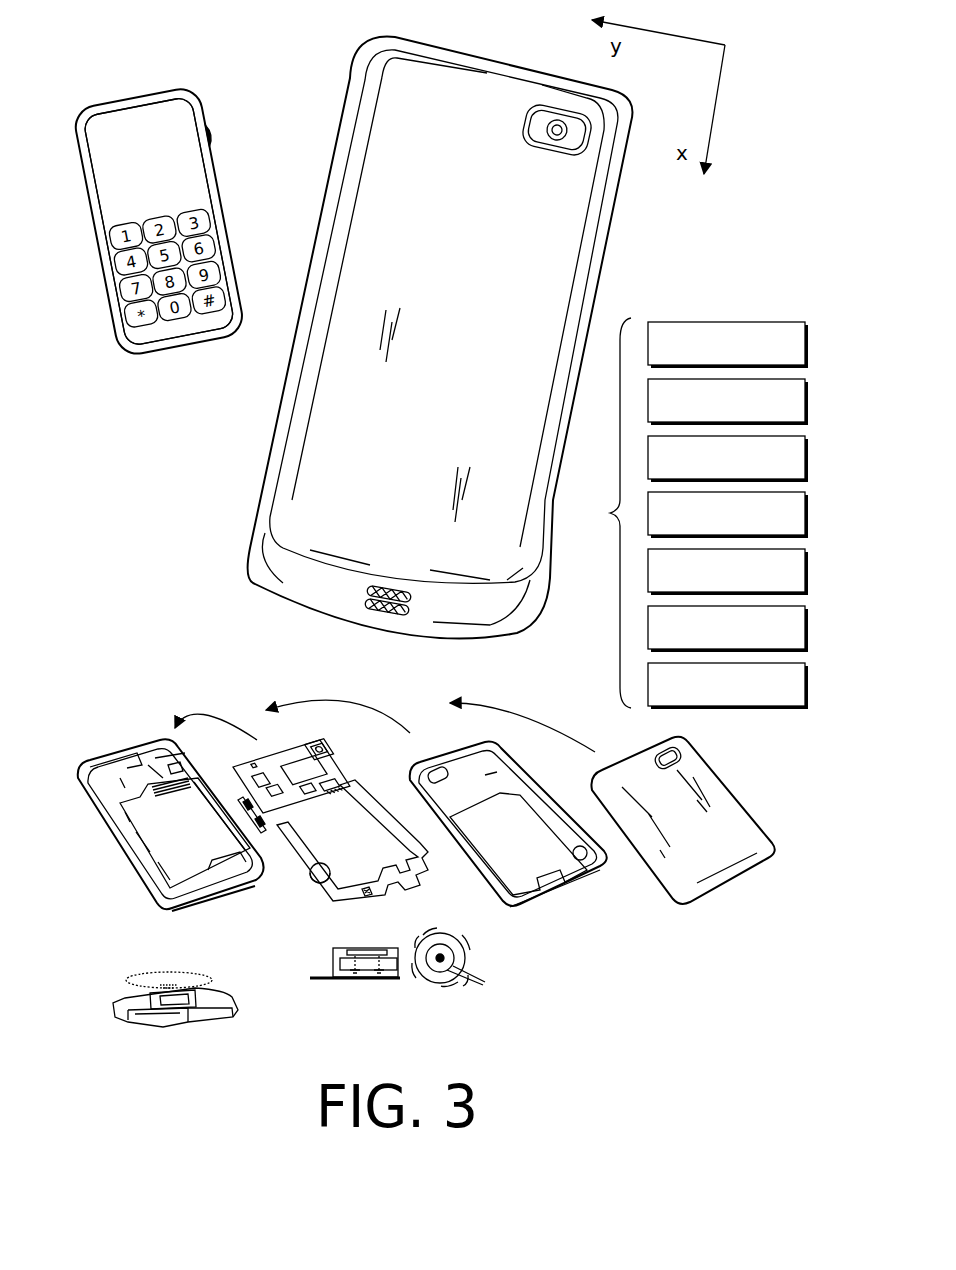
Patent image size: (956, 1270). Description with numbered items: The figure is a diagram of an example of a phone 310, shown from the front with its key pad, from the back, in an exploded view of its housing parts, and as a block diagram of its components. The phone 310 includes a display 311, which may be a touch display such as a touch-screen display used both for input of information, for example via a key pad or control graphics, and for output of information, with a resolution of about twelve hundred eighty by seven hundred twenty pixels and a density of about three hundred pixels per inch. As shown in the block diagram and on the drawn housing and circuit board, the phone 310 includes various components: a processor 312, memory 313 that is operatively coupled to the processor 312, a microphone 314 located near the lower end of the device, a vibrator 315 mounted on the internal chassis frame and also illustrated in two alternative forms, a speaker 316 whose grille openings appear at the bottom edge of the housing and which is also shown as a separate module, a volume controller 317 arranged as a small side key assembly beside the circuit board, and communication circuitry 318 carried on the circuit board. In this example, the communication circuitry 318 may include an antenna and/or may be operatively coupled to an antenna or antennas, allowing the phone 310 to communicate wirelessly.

The phone 310 is at (342, 100).
The display 311 is at (183, 124).
The processor 312 is at (727, 401).
The memory 313 is at (727, 458).
The microphone 314 is at (368, 897).
The vibrator 315 is at (328, 864).
The speaker 316 is at (391, 612).
The volume controller 317 is at (258, 818).
The communication circuitry 318 is at (303, 770).